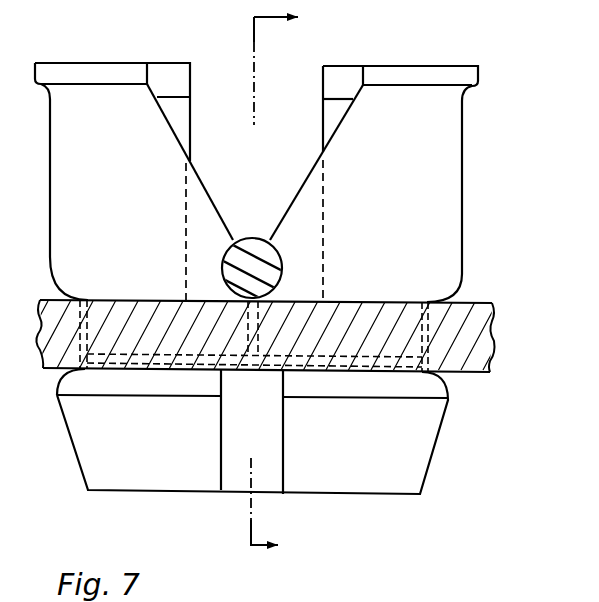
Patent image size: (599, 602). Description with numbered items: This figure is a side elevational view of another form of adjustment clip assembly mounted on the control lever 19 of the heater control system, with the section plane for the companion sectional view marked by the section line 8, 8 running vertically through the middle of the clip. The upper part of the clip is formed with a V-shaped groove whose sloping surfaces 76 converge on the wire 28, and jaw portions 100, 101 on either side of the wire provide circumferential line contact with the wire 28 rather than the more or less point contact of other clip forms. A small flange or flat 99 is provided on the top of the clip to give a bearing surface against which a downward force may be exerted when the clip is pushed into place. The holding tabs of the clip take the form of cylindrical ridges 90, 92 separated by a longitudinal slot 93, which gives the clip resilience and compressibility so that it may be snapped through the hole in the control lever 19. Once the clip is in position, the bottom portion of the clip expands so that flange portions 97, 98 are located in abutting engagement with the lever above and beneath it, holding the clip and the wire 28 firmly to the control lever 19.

The section line 8- 8 is at (291, 286).
The control lever 19 is at (488, 300).
The wire 28 is at (247, 236).
The V-groove surfaces 76 is at (198, 166).
The cylindrical ridge 90 is at (464, 247).
The cylindrical ridge 92 is at (454, 405).
The longitudinal slot 93 is at (241, 428).
The flange portion 97 is at (68, 286).
The flange portion 98 is at (62, 376).
The flange or flat 99 is at (424, 64).
The jaw portion 100 is at (221, 274).
The jaw portion 101 is at (285, 268).